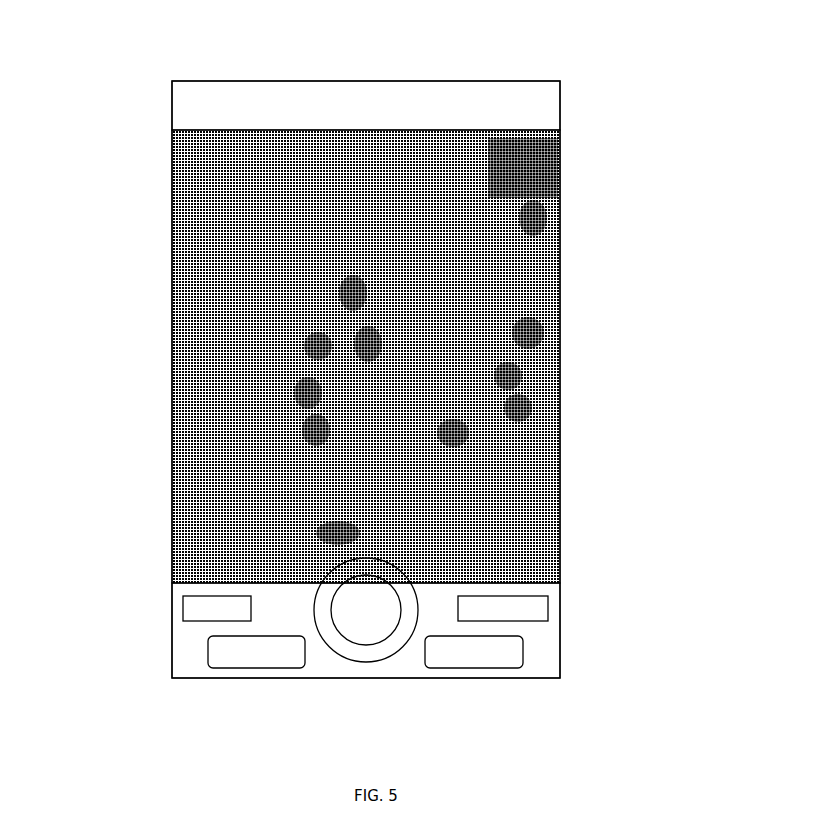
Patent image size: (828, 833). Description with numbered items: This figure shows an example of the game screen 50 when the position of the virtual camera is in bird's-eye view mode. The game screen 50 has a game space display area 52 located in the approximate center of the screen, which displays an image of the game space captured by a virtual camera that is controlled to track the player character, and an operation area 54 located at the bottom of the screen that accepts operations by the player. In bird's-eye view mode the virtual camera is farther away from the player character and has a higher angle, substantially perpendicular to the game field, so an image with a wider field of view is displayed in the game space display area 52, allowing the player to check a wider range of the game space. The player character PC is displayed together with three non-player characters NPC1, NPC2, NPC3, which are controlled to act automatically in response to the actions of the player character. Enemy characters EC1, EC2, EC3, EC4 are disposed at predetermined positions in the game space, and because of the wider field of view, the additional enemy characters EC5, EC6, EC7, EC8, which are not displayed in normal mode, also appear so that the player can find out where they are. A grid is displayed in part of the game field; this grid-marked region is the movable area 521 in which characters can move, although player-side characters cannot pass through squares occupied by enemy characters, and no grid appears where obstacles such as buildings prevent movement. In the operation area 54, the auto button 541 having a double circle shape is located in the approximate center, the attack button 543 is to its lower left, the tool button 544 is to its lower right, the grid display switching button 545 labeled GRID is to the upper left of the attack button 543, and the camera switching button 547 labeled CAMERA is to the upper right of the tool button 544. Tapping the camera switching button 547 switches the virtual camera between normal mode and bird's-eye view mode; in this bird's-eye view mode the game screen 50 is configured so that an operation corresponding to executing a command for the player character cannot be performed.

The game screen 50 is at (391, 73).
The enemy character EC2 is at (325, 228).
The game space display area 52 is at (537, 282).
The movable area 521 is at (552, 146).
The enemy character EC8 is at (552, 196).
The enemy character EC7 is at (552, 322).
The enemy character EC6 is at (495, 366).
The enemy character EC1 is at (505, 398).
The enemy character EC4 is at (437, 420).
The enemy character EC5 is at (303, 520).
The enemy character EC3 is at (300, 336).
The non-player character NPC1 is at (337, 278).
The non-player character NPC2 is at (293, 382).
The non-player character NPC3 is at (300, 418).
The player character PC is at (352, 330).
The operation area 54 is at (164, 652).
The grid display switching button 545 is at (175, 600).
The camera switching button 547 is at (540, 600).
The attack button 543 is at (230, 660).
The tool button 544 is at (468, 660).
The auto button 541 is at (358, 637).